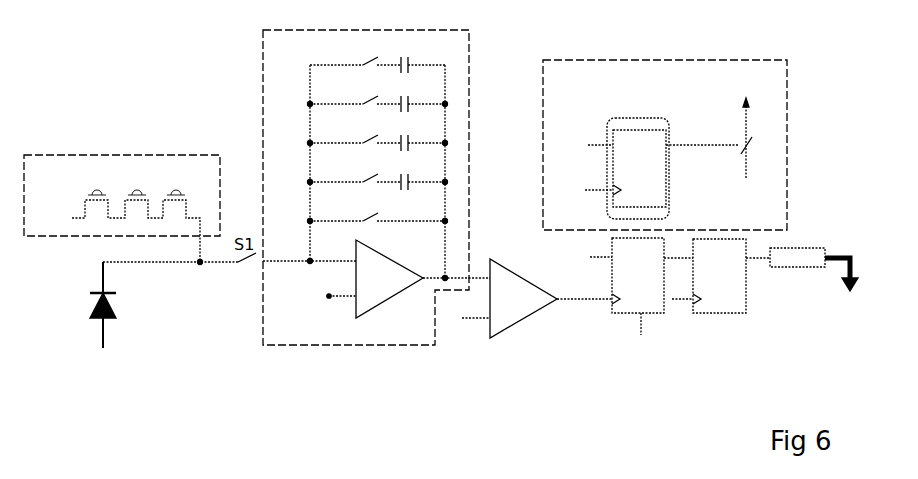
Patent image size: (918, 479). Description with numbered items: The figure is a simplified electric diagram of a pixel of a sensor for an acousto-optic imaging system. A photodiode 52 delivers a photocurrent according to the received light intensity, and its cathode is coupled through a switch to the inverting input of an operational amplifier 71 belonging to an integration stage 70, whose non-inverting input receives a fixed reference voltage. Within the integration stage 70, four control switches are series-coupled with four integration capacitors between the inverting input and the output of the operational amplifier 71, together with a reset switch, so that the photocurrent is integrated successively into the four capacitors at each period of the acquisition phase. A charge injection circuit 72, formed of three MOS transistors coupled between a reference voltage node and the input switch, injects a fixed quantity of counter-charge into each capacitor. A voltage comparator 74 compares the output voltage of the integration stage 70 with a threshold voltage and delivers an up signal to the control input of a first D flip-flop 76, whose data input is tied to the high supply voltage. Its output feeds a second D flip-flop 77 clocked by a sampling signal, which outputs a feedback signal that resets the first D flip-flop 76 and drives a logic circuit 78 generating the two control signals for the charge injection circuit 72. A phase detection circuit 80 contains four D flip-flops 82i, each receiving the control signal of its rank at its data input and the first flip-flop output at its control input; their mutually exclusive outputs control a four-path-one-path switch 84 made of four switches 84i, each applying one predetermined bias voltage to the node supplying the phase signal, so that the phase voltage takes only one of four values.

The charge injection circuit 72 is at (80, 157).
The photodiode 52 is at (116, 310).
The integration stage 70 is at (371, 217).
The operational amplifier 71 is at (383, 300).
The voltage comparator 74 is at (518, 326).
The first D flip-flop 76 is at (620, 313).
The second D flip-flop 77 is at (720, 313).
The logic circuit 78 is at (803, 248).
The phase detection circuit 80 is at (699, 145).
The D flip-flop 82i is at (640, 130).
The switch 84i is at (729, 145).
The four-path-one-path switch 84 is at (735, 158).